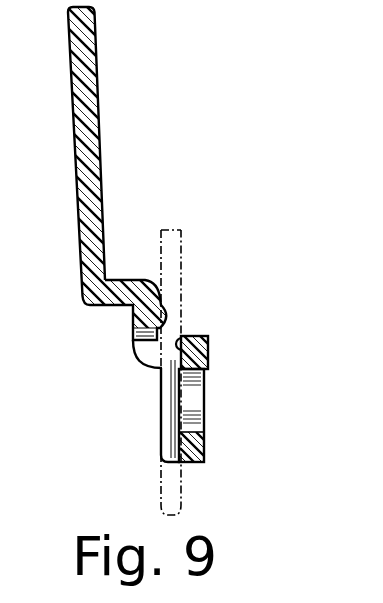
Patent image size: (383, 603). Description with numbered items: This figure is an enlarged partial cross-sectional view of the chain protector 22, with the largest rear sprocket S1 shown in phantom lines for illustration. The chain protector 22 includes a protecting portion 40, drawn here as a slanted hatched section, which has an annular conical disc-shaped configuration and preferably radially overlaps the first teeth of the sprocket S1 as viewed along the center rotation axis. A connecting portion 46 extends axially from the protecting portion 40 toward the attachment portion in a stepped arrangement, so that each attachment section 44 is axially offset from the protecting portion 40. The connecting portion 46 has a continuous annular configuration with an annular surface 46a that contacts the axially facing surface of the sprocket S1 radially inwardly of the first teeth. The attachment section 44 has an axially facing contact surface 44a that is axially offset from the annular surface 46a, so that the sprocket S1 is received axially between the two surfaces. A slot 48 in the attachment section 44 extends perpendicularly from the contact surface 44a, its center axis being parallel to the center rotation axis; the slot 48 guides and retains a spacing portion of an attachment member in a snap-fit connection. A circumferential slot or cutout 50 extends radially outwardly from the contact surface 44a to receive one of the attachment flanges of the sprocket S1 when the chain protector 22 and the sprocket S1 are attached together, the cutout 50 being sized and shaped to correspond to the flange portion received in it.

The chain protector 22 is at (118, 54).
The protecting portion 40 is at (84, 101).
The connecting portion 46 is at (137, 282).
The annular surface 46a is at (152, 338).
The sprocket S1 is at (183, 245).
The attachment section 44 is at (210, 353).
The circumferential slot 50 is at (180, 337).
The axially facing contact surface 44a is at (182, 442).
The slot 48 is at (210, 404).